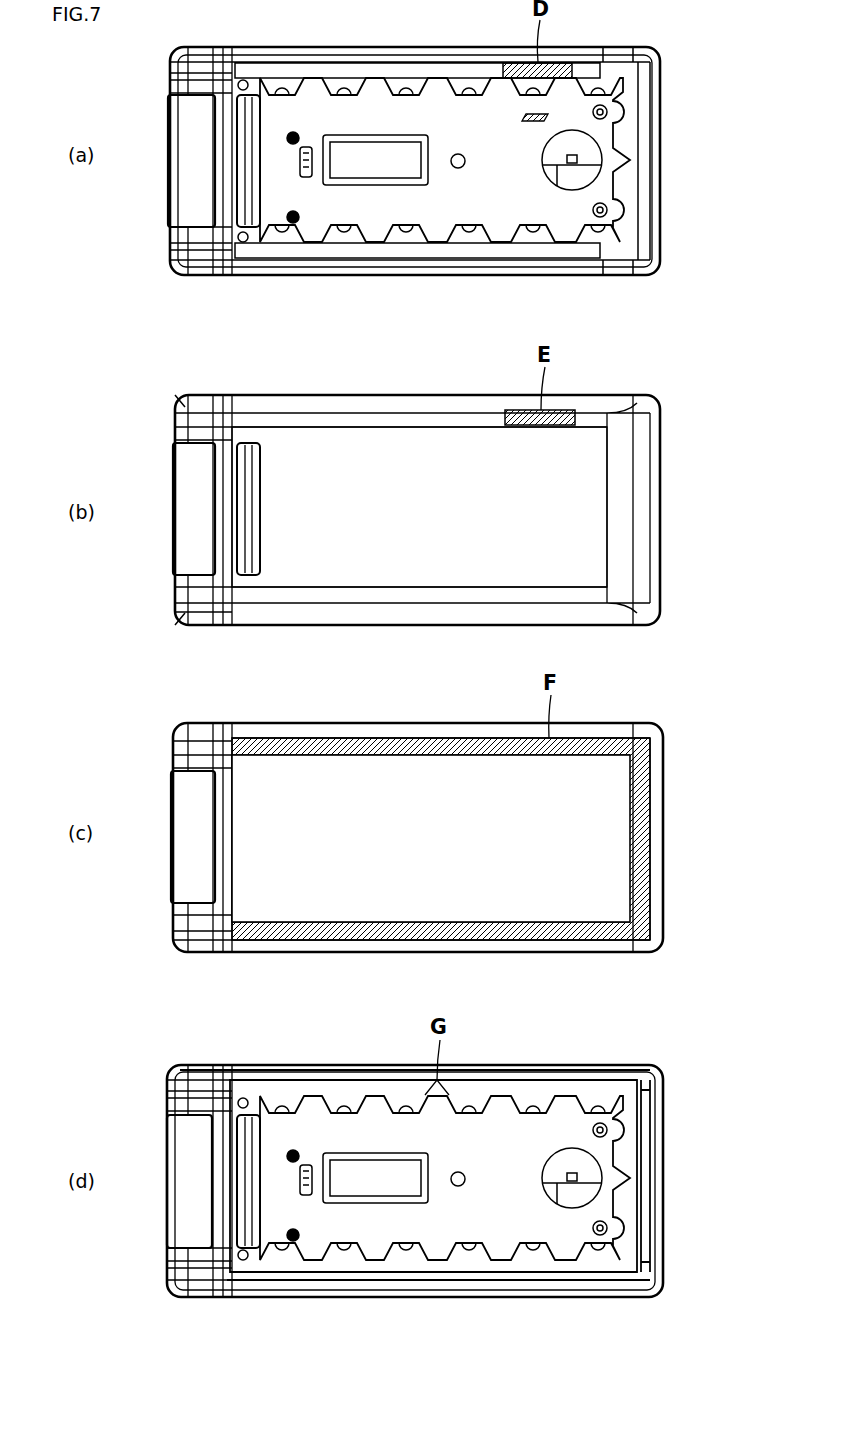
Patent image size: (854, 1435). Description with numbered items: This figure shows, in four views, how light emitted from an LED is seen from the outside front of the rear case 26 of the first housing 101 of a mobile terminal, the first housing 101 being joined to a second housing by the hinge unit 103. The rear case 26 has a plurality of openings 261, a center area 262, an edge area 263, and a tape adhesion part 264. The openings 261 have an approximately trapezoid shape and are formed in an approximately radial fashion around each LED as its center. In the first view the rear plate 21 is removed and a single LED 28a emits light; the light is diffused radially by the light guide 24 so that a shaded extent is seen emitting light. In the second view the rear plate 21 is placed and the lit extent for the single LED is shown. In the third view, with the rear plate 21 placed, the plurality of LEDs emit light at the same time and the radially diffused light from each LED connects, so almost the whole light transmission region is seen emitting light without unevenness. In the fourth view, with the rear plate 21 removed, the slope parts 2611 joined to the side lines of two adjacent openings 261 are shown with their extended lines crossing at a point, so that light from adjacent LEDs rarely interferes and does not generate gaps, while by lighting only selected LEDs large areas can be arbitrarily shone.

The rear plate 21 is at (432, 570).
The light guide 24 is at (278, 85).
The rear case 26 is at (638, 270).
The single LED 28a is at (531, 112).
The first housing 101 is at (660, 110).
The hinge unit 103 is at (183, 207).
The openings 261 is at (280, 243).
The center area 262 is at (437, 213).
The edge area 263 is at (644, 1272).
The tape adhesion part 264 is at (243, 1272).
The slope parts 2611 is at (379, 1110).